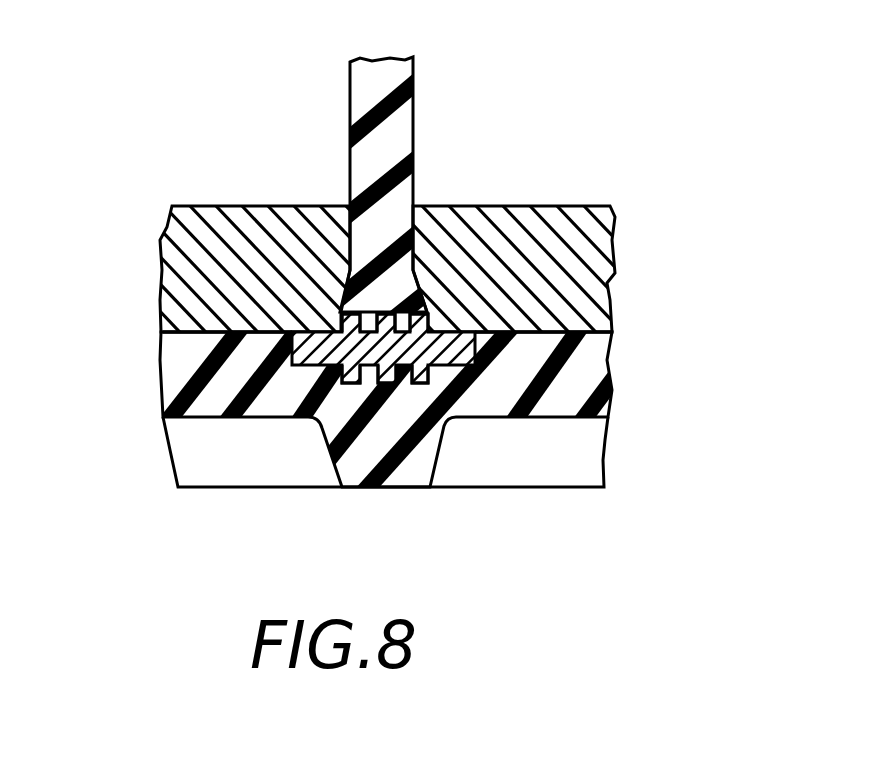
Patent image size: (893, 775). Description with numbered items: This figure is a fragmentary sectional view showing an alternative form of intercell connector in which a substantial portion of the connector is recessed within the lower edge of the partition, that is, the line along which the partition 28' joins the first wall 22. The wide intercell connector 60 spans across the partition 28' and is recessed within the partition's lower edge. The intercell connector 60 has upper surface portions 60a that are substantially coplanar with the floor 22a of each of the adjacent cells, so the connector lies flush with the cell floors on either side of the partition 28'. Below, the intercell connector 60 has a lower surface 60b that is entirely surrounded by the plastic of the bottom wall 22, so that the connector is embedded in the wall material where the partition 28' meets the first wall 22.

The partition 28' is at (439, 193).
The first wall 22 is at (217, 417).
The floor 22a is at (572, 332).
The intercell connector 60 is at (428, 360).
The upper surface portions 60a is at (308, 330).
The lower surface 60b is at (317, 363).